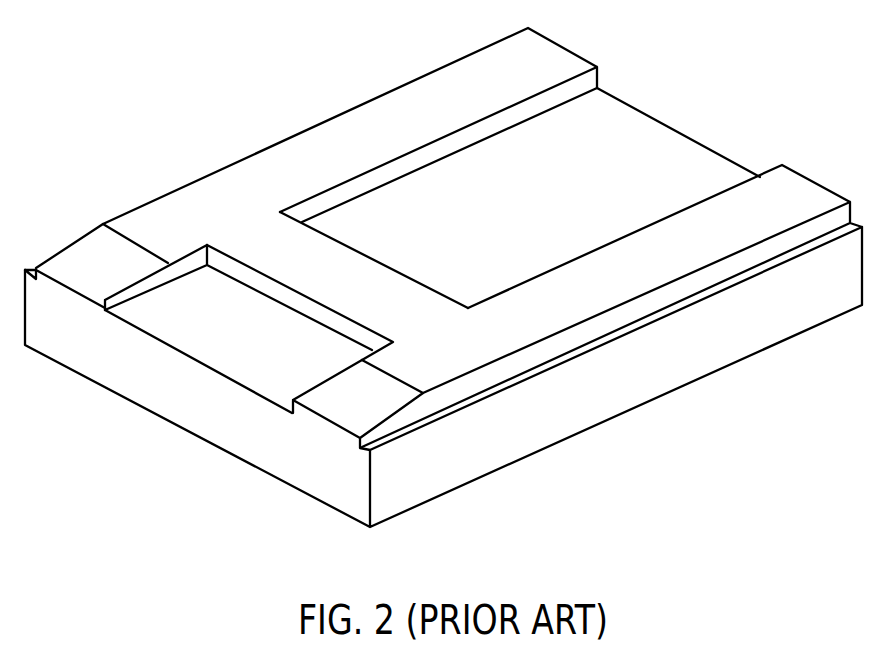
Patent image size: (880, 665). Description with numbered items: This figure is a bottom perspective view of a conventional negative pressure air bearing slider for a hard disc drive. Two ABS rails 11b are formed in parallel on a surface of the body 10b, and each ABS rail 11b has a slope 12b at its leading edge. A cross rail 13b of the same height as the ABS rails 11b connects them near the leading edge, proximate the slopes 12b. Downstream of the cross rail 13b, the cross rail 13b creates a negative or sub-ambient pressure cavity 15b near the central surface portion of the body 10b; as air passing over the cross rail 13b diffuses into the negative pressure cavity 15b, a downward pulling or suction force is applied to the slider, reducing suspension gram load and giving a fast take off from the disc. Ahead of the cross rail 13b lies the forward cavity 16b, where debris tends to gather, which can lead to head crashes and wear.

The body 10b is at (643, 149).
The ABS rail 11b is at (336, 146).
The slope 12b is at (88, 263).
The cross rail 13b is at (374, 287).
The negative pressure cavity 15b is at (439, 250).
The forward cavity 16b is at (245, 323).